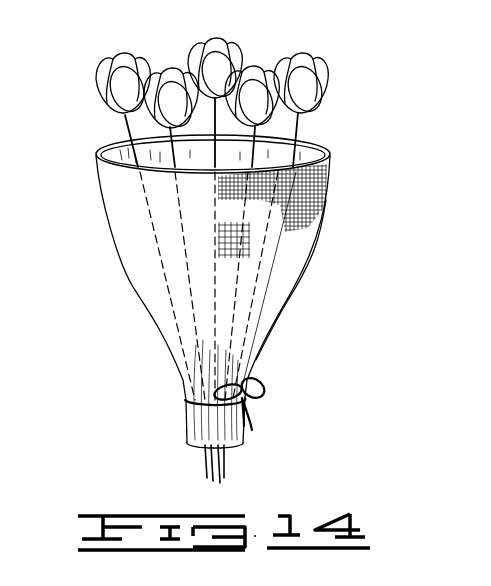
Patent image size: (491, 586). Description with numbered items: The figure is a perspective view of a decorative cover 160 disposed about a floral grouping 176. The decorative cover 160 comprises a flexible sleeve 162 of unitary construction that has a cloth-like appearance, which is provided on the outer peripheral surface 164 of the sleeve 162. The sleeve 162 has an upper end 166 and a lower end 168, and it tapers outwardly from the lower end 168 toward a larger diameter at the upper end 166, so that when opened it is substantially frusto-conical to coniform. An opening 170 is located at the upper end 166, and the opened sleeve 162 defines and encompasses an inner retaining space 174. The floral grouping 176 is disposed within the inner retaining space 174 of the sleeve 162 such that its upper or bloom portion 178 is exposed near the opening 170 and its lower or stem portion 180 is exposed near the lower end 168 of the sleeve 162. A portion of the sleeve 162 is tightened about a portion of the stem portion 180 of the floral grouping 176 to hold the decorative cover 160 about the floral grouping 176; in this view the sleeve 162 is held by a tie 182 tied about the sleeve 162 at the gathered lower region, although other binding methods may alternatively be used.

The decorative cover 160 is at (201, 246).
The sleeve 162 is at (298, 327).
The outer peripheral surface 164 is at (288, 248).
The upper end 166 is at (330, 150).
The lower end 168 is at (238, 445).
The opening 170 is at (300, 140).
The inner retaining space 174 is at (118, 152).
The floral grouping 176 is at (333, 63).
The bloom portion 178 is at (223, 42).
The stem portion 180 is at (205, 460).
The tie 182 is at (262, 386).